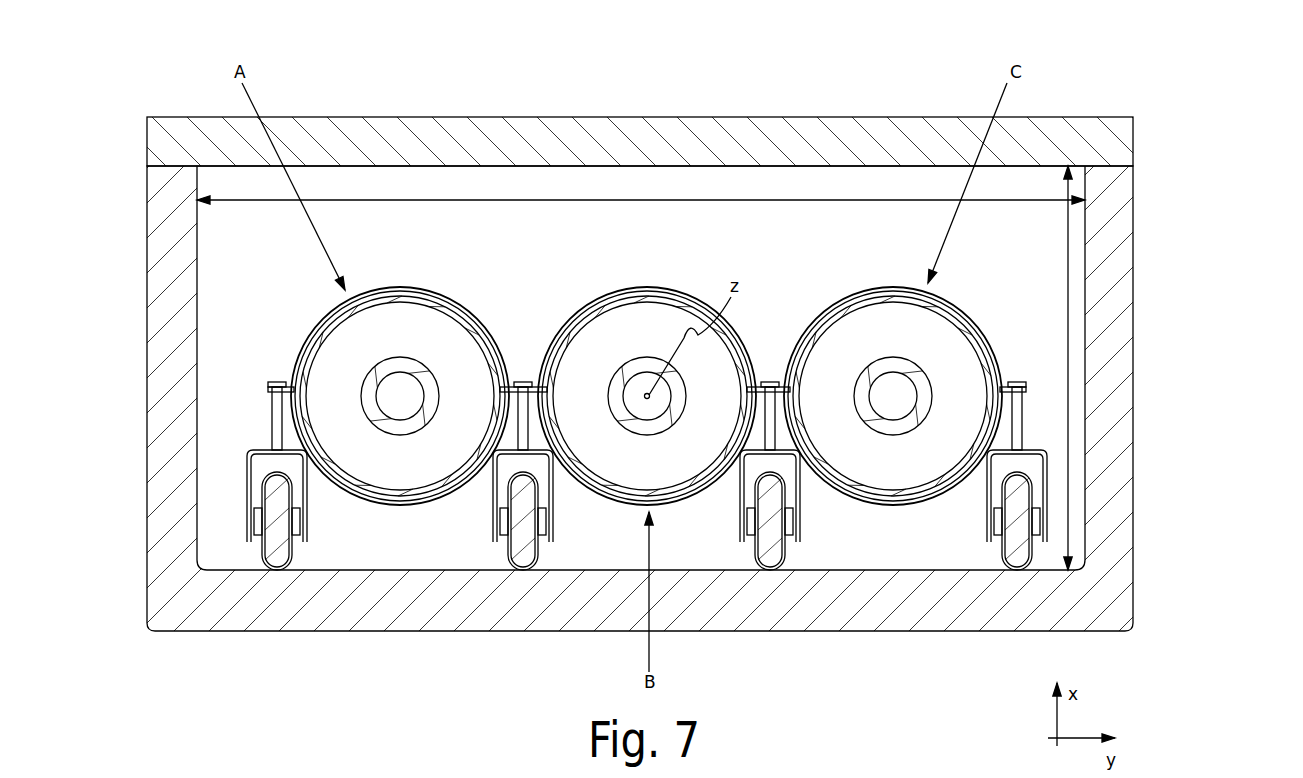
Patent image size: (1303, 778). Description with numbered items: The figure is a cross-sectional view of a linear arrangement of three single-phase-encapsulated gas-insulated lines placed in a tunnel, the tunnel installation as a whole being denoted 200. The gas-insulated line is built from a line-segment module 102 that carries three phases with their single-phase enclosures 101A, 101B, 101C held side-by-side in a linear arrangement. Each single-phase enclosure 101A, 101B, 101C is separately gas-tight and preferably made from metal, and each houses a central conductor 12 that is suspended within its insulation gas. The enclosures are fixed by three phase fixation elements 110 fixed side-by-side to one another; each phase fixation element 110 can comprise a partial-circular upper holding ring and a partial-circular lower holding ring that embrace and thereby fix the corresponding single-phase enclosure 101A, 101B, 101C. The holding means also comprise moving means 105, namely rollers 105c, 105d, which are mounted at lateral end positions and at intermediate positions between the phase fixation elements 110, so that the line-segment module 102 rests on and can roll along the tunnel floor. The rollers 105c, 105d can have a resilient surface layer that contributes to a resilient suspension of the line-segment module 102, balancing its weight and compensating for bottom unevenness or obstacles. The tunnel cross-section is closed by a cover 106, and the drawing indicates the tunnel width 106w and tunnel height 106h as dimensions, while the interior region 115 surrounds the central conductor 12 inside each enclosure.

The roller assembly 200 is at (600, 346).
The line-segment module 102 is at (290, 282).
The lid 106 is at (588, 115).
The housing width 106w is at (428, 198).
The housing height 106h is at (1070, 245).
The phase fixation element 110 is at (878, 288).
The single-phase enclosure 101A is at (393, 300).
The single-phase enclosure 101B is at (689, 498).
The single-phase enclosure 101C is at (953, 320).
The roller body 115 is at (340, 385).
The central conductor 12 is at (385, 365).
The moving means 105 is at (647, 537).
The roller 105c is at (494, 548).
The roller 105d is at (988, 548).